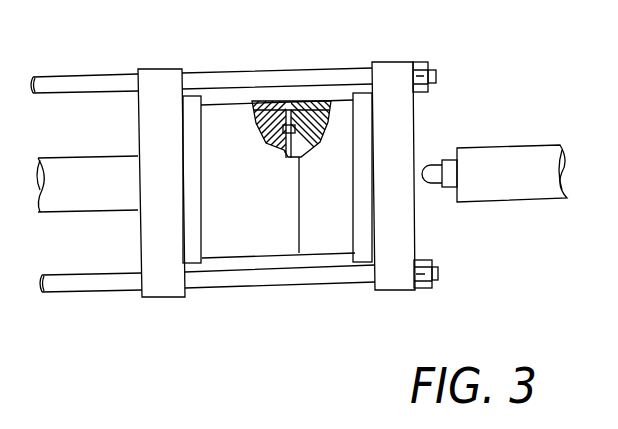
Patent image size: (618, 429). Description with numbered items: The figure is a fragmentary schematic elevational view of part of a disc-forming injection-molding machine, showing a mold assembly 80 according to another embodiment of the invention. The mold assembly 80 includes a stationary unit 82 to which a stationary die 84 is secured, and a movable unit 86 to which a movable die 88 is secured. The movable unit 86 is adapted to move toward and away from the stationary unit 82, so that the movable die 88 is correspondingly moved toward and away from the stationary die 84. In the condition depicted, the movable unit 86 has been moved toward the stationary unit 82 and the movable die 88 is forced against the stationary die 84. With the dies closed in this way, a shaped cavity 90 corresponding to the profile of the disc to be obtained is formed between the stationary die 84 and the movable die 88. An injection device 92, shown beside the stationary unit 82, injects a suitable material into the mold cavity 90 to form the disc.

The mold assembly 80 is at (295, 82).
The stationary unit 82 is at (393, 80).
The stationary die 84 is at (334, 89).
The movable unit 86 is at (156, 89).
The movable die 88 is at (221, 92).
The shaped cavity 90 is at (287, 153).
The injection device 92 is at (512, 152).